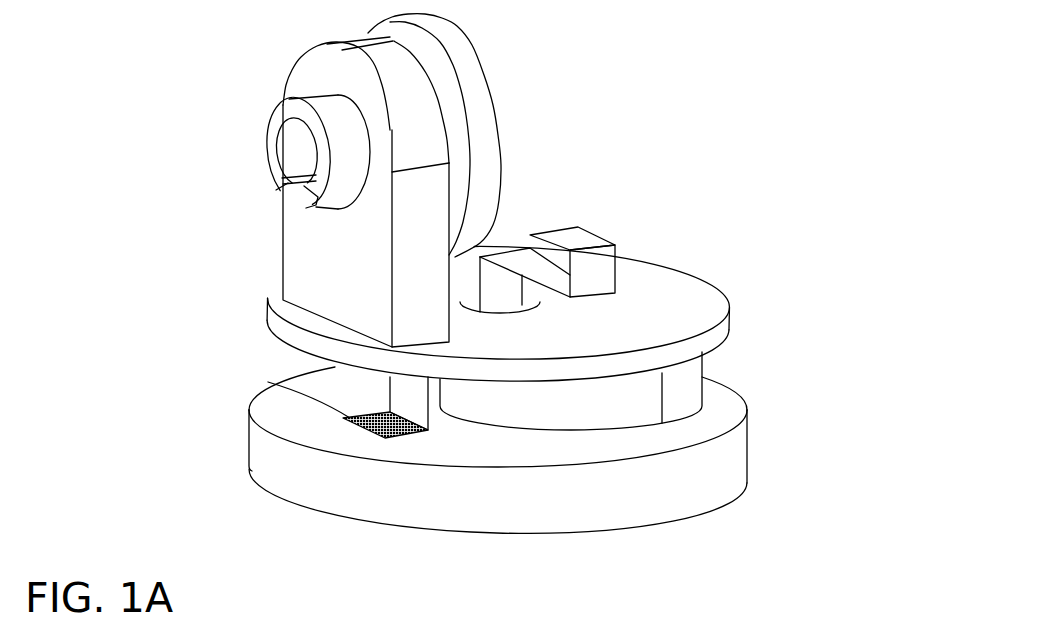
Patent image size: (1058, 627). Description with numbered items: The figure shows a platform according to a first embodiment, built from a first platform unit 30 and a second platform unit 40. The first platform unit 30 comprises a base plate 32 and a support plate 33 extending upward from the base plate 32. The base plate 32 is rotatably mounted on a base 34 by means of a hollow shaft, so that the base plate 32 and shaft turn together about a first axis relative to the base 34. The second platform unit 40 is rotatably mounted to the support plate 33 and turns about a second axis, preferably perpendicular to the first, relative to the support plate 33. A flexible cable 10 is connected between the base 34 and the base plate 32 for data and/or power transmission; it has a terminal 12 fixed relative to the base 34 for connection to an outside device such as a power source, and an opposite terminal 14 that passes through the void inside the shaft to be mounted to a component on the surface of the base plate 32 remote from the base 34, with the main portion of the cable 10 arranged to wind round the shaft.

The flexible cable 10 is at (683, 388).
The terminal 12 is at (268, 382).
The opposite terminal 14 is at (593, 263).
The first platform unit 30 is at (410, 211).
The base plate 32 is at (277, 322).
The support plate 33 is at (313, 260).
The base 34 is at (707, 466).
The second platform unit 40 is at (477, 105).